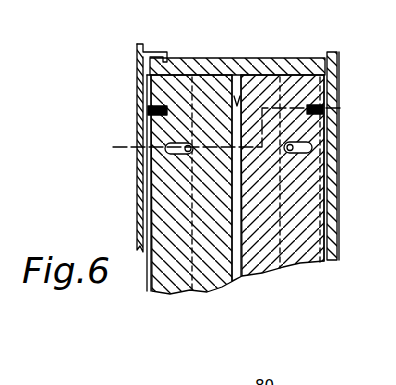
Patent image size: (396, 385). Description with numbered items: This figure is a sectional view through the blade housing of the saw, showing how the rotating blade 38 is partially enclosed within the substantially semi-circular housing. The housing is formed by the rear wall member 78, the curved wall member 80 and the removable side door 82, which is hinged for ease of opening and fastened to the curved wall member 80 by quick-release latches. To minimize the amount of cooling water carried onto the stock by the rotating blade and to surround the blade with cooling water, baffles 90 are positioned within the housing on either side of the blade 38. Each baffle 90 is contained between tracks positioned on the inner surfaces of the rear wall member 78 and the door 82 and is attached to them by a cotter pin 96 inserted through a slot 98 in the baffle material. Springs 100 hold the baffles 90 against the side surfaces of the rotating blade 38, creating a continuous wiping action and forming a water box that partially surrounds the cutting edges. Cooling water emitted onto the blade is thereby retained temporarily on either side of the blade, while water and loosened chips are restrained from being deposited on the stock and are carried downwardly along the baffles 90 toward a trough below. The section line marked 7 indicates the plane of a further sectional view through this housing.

The section line 7- 7 is at (113, 147).
The blade 38 is at (237, 276).
The rear wall member 78 is at (340, 192).
The curved wall member 80 is at (247, 62).
The removable side door 82 is at (137, 209).
The perpendicular baffle 90 is at (178, 288).
The cotter pin 96 is at (190, 152).
The slot 98 is at (172, 149).
The spring 100 is at (150, 105).